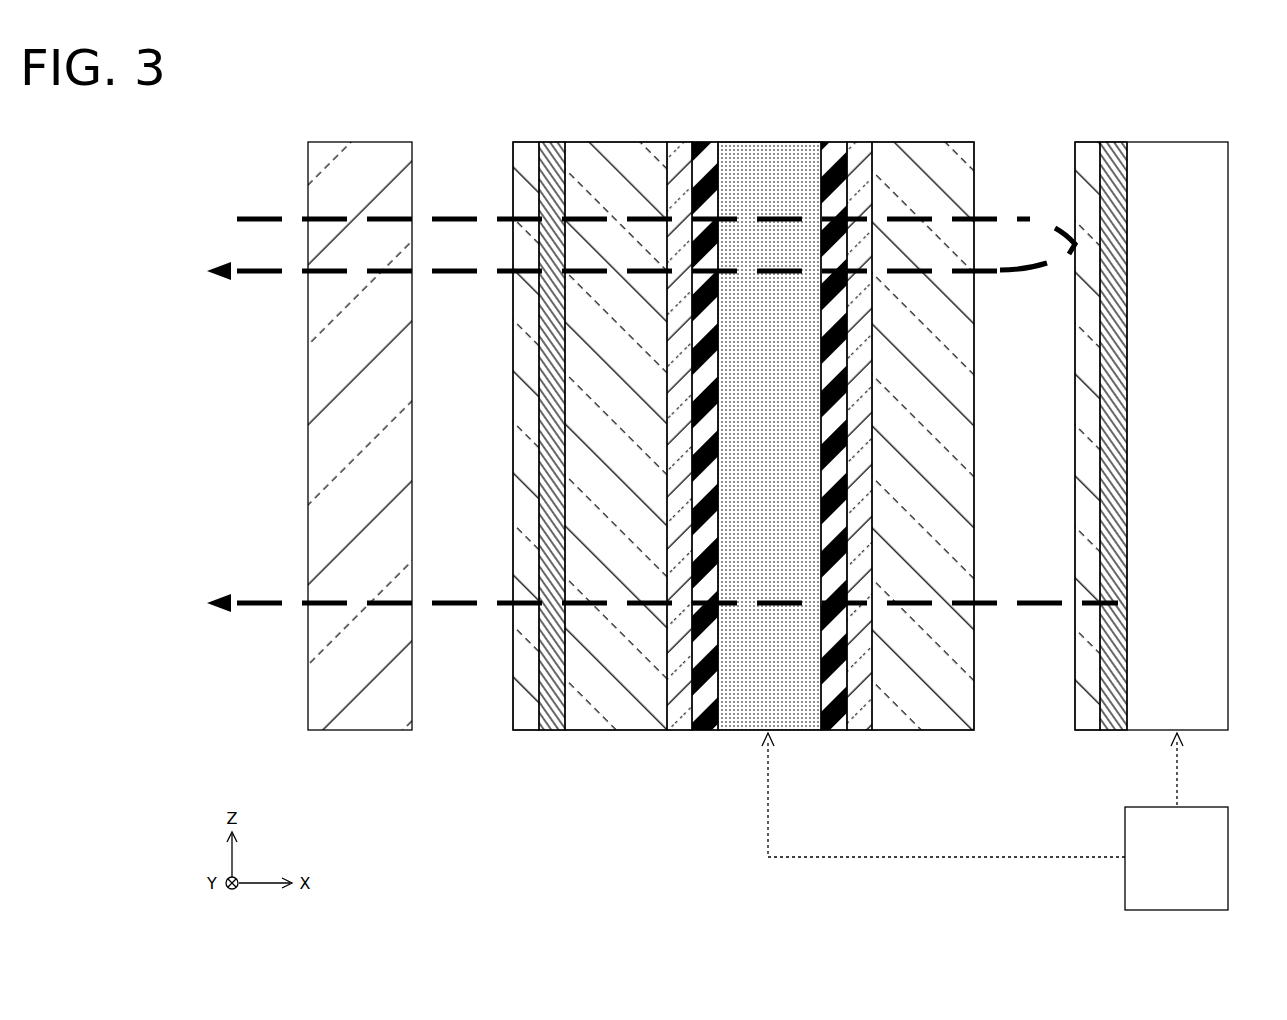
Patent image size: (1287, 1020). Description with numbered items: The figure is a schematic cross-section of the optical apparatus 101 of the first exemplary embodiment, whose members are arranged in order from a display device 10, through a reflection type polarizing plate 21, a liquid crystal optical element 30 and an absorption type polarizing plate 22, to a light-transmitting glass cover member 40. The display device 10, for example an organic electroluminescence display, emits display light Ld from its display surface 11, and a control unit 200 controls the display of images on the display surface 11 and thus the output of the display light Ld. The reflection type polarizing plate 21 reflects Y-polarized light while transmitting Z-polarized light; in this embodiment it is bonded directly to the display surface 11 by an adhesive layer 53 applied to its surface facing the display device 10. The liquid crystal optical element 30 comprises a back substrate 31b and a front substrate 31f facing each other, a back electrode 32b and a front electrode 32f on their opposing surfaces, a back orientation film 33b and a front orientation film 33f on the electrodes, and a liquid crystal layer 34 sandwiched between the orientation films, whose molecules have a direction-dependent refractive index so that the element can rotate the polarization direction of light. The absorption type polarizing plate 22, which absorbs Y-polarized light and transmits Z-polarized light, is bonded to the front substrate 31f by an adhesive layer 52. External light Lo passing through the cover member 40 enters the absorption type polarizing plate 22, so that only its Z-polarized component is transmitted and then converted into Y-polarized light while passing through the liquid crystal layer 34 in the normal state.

The optical apparatus 101 is at (1202, 64).
The display device 10 is at (1177, 142).
The display surface 11 is at (1125, 732).
The reflection type polarizing plate 21 is at (1088, 142).
The absorption type polarizing plate 22 is at (526, 142).
The liquid crystal optical element 30 is at (568, 125).
The front substrate 31f is at (615, 732).
The back substrate 31b is at (918, 732).
The front electrode 32f is at (680, 732).
The back electrode 32b is at (858, 732).
The front orientation film 33f is at (705, 732).
The back orientation film 33b is at (835, 732).
The liquid crystal layer 34 is at (780, 707).
The cover member 40 is at (362, 142).
The adhesive layer 52 is at (551, 142).
The adhesive layer 53 is at (1113, 142).
The control unit 200 is at (1160, 868).
The external light Lo is at (207, 219).
The display light Ld is at (207, 580).